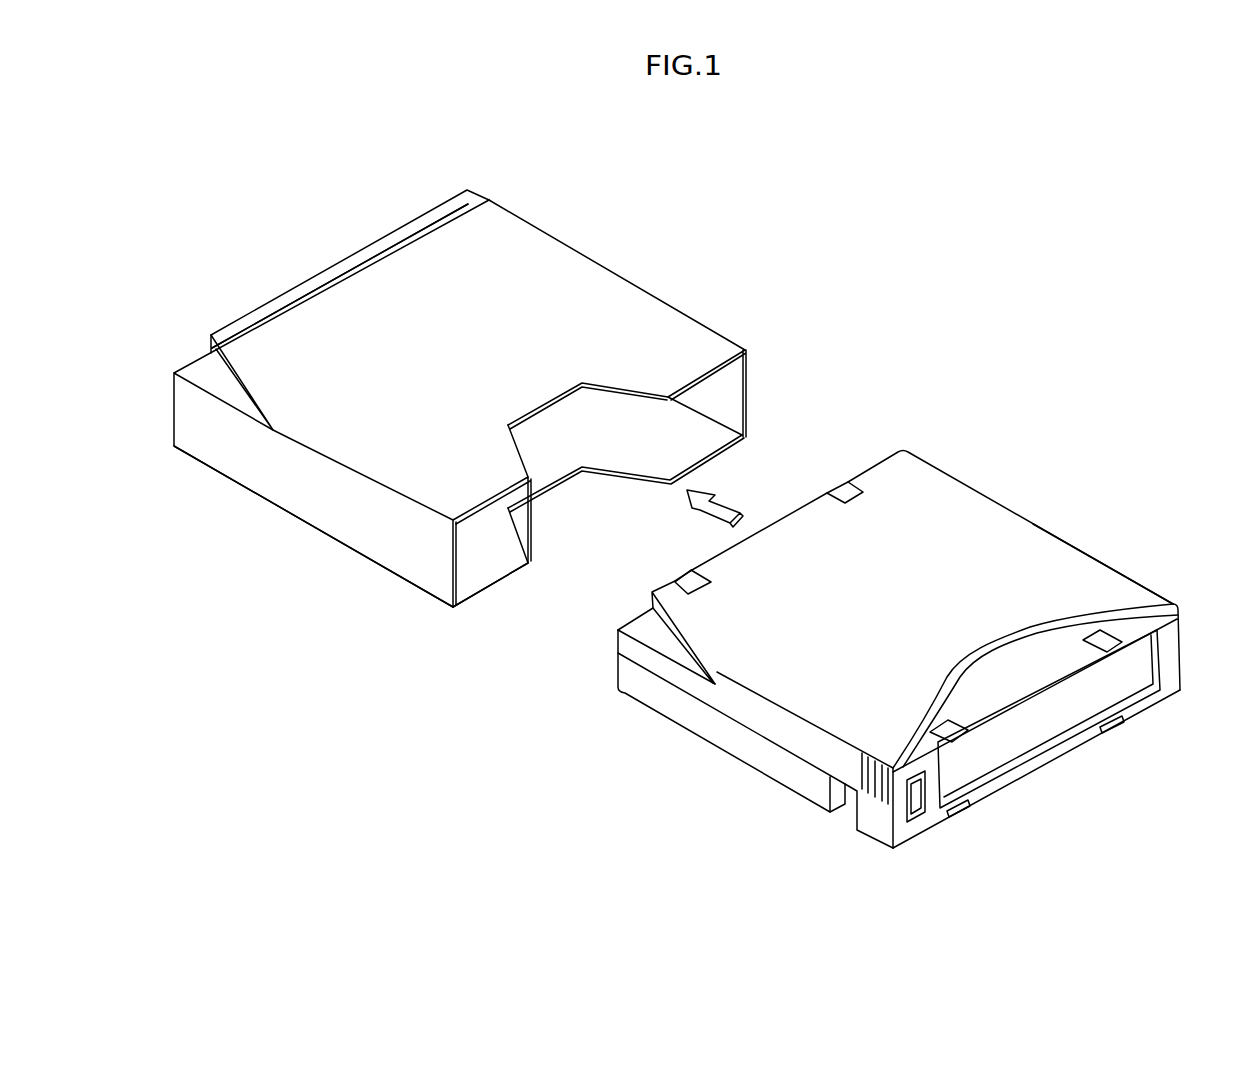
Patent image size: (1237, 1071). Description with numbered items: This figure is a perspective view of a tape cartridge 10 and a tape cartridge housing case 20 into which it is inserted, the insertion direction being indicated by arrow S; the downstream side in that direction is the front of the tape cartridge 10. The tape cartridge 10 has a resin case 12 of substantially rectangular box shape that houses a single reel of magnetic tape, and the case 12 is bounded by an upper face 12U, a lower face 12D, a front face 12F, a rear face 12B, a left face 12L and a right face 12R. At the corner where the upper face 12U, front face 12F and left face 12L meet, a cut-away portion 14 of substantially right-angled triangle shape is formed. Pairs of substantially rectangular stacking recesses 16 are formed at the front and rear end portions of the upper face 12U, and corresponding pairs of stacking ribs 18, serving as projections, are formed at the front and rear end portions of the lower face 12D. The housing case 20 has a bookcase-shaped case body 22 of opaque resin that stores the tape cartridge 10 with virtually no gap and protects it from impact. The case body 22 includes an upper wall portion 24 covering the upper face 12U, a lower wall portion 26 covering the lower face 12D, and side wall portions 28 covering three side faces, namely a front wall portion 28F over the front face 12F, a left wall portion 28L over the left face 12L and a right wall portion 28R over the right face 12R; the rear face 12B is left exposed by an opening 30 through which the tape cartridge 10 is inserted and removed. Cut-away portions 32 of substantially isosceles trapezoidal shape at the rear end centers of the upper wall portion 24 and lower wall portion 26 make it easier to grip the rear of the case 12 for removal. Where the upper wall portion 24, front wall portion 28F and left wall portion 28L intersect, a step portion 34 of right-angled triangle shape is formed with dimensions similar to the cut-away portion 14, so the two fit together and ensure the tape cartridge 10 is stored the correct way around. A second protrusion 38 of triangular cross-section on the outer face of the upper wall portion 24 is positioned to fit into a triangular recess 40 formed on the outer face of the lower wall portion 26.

The tape cartridge 10 is at (1087, 497).
The case 12 is at (1123, 573).
The upper face 12U is at (938, 510).
The lower face 12D is at (805, 775).
The front face 12F is at (883, 460).
The rear face 12B is at (1047, 735).
The left face 12L is at (710, 723).
The right face 12R is at (1033, 523).
The cut-away portion 14 is at (642, 627).
The stacking recesses 16 is at (845, 485).
The stacking ribs 18 is at (1117, 720).
The tape cartridge housing case 20 is at (640, 230).
The case body 22 is at (673, 303).
The upper wall portion 24 is at (518, 260).
The lower wall portion 26 is at (497, 560).
The side wall portions 28 is at (542, 375).
The front wall portion 28F is at (403, 222).
The right wall portion 28R is at (727, 388).
The left wall portion 28L is at (342, 523).
The opening 30 is at (458, 568).
The cut-away portions 32 is at (623, 387).
The step portion 34 is at (202, 362).
The second protrusion 38 is at (293, 310).
The recess 40 is at (192, 452).
The arrow S is at (727, 495).